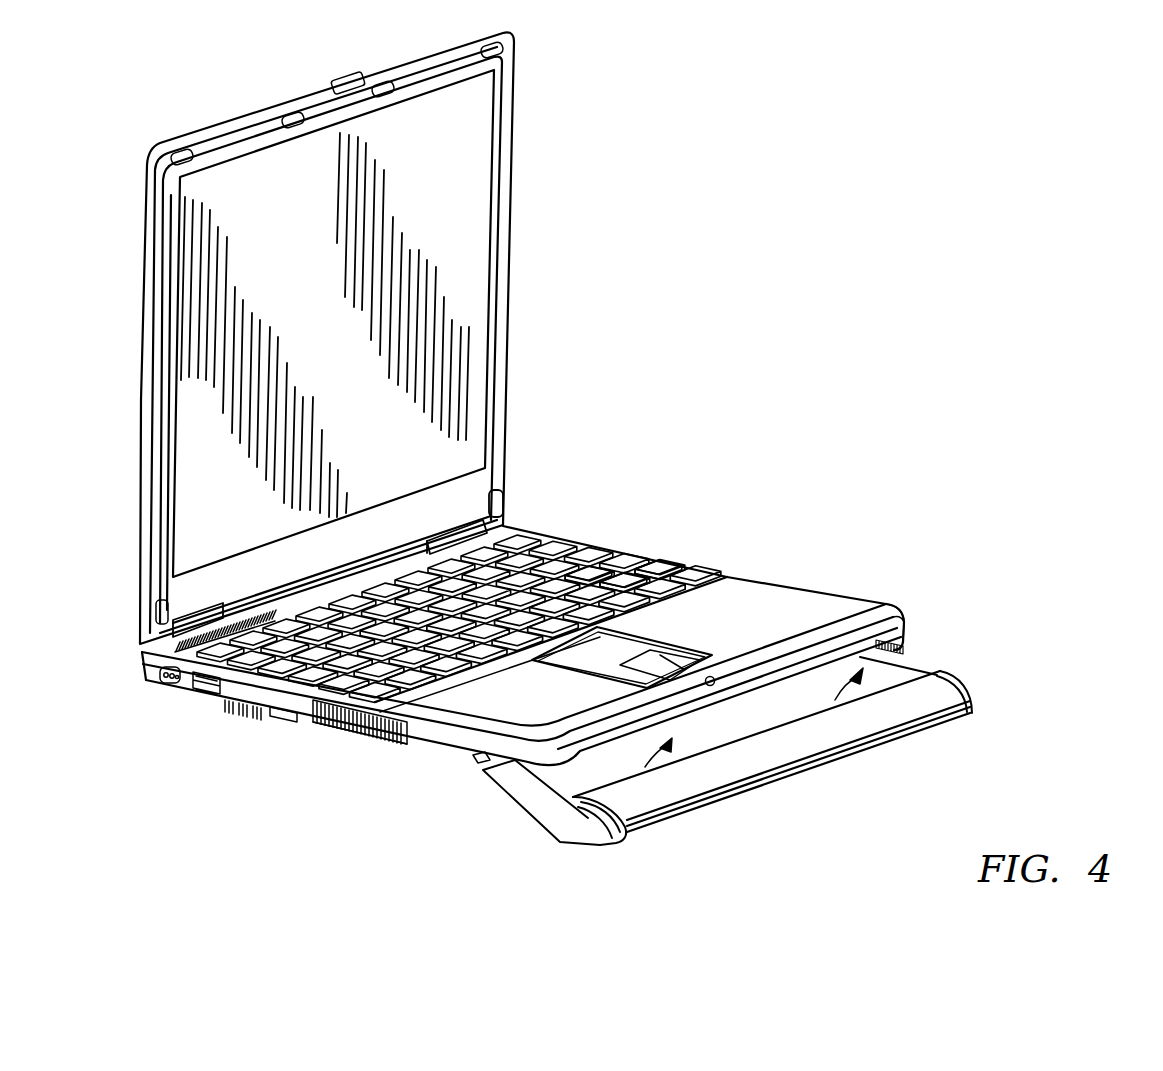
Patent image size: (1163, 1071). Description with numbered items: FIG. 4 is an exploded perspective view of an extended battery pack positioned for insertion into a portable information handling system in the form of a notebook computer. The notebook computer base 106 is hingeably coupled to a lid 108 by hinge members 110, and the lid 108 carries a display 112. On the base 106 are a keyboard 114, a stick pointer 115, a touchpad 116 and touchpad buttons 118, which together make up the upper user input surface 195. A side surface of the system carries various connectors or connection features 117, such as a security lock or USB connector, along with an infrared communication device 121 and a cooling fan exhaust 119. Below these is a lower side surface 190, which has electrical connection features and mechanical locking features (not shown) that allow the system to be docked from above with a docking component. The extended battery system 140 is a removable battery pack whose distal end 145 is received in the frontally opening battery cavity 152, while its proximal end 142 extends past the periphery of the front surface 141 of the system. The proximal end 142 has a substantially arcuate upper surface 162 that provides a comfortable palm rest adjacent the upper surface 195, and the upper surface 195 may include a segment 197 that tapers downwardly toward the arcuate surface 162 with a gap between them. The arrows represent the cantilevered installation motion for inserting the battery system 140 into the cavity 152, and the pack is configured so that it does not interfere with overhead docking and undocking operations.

The notebook computer base 106 is at (142, 655).
The lid 108 is at (152, 617).
The hinge members 110 is at (193, 617).
The display 112 is at (468, 252).
The keyboard 114 is at (620, 583).
The stick pointer 115 is at (540, 537).
The touchpad 116 is at (613, 650).
The connectors or connection features 117 is at (187, 697).
The touchpad buttons 118 is at (655, 645).
The cooling fan exhaust 119 is at (377, 745).
The infrared communication device 121 is at (287, 715).
The extended battery system 140 is at (812, 773).
The front surface 141 is at (543, 787).
The proximal end 142 is at (593, 827).
The distal end 145 is at (540, 800).
The battery cavity 152 is at (860, 660).
The substantially arcuate upper surface 162 is at (943, 708).
The lower side surface 190 is at (367, 742).
The upper user input surface 195 is at (790, 606).
The segment 197 is at (868, 622).